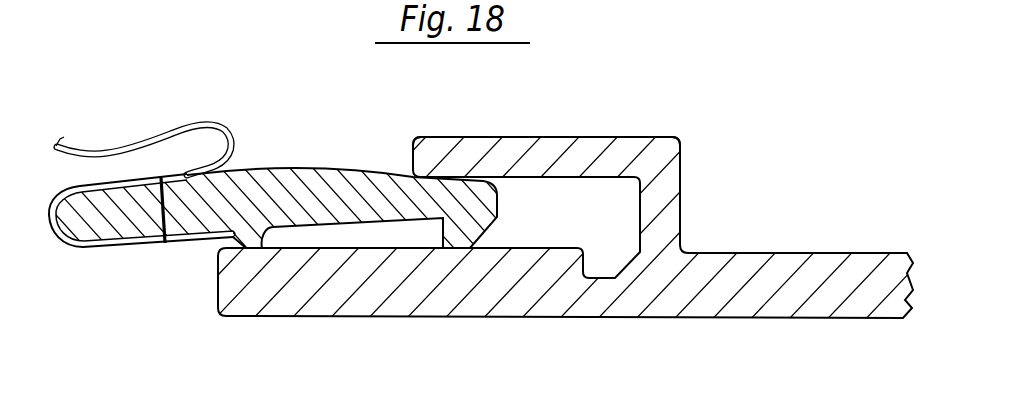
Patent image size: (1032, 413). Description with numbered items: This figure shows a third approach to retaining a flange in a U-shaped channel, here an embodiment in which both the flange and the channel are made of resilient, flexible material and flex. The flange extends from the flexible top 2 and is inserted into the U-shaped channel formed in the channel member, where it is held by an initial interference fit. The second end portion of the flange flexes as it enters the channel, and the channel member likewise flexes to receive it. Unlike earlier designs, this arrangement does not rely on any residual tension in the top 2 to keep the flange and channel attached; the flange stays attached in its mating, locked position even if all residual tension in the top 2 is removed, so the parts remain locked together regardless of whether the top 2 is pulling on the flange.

The top 2 is at (108, 135).